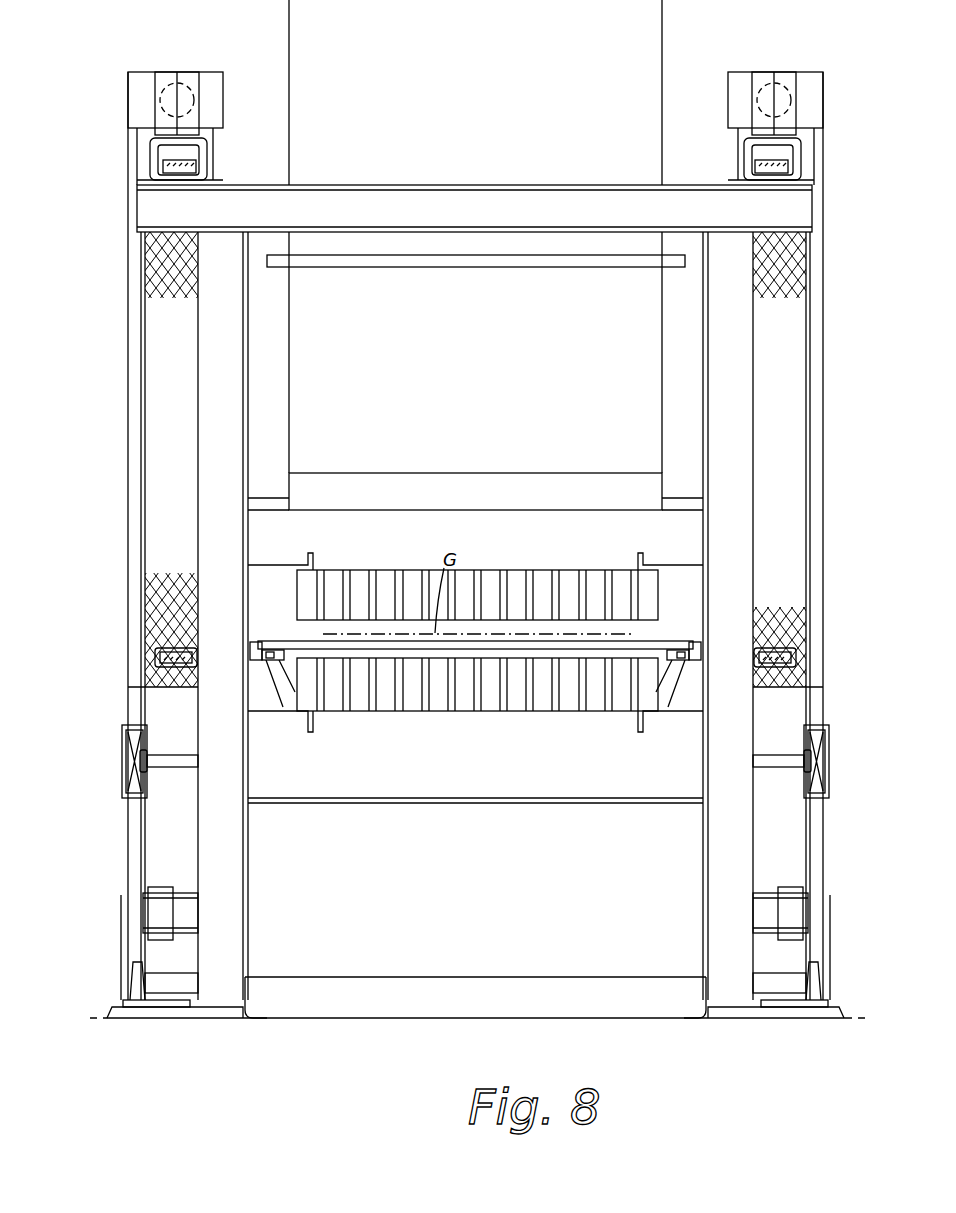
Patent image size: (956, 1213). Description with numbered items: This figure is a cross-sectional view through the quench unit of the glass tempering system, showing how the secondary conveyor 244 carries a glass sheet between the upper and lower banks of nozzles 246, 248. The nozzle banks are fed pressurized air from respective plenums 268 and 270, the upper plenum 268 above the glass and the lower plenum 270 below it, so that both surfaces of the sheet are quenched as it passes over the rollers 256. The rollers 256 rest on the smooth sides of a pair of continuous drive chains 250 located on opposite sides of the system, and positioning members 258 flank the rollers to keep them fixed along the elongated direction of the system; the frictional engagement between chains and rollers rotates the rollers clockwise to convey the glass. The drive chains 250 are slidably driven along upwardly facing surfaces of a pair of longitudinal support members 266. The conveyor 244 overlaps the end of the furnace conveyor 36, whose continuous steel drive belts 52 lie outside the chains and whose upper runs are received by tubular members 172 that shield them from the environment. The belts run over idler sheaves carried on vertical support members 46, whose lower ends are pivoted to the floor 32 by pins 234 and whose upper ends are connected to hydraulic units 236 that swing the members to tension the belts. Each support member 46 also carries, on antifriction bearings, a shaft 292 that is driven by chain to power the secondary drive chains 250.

The floor 32 is at (392, 1010).
The conveyor 36 is at (138, 257).
The vertical support members 46 is at (128, 365).
The drive belts 52 is at (172, 168).
The tubular members 172 is at (192, 157).
The pins 234 is at (165, 981).
The hydraulic unit 236 is at (179, 86).
The secondary conveyor 244 is at (670, 630).
The upper bank of nozzles 246 is at (500, 585).
The lower bank of nozzles 248 is at (545, 690).
The drive chains 250 is at (280, 661).
The rollers 256 is at (352, 650).
The positioning members 258 is at (258, 645).
The support members 266 is at (258, 656).
The plenum 268 is at (278, 525).
The plenum 270 is at (345, 799).
The shaft 292 is at (185, 768).